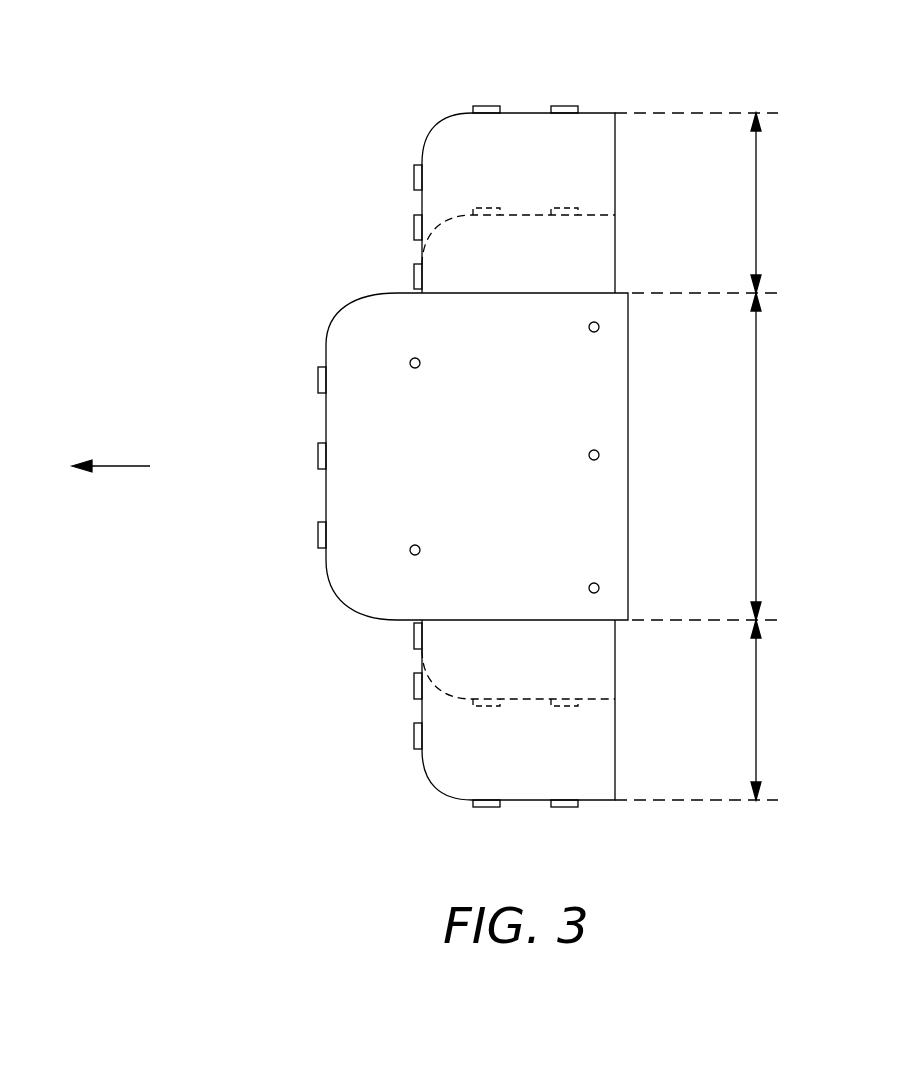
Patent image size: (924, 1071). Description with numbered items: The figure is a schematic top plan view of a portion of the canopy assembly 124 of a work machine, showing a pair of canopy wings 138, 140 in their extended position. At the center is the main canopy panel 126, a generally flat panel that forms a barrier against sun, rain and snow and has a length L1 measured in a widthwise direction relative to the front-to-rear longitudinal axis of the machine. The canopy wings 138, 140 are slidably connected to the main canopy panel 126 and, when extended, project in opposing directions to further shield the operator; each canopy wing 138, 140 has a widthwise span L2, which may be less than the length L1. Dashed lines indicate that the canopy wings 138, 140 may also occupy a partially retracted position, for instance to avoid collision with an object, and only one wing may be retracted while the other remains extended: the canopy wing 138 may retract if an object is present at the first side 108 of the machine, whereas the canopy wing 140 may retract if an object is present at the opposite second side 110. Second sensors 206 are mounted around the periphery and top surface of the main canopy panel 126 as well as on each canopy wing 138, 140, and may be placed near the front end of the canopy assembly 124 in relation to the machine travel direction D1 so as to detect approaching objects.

The second side 110 is at (538, 68).
The canopy assembly 124 is at (780, 69).
The canopy wing 140 is at (596, 163).
The main canopy panel 126 is at (338, 582).
The canopy wing 138 is at (596, 665).
The second sensor 206 is at (414, 280).
The first side 108 is at (517, 830).
The length L1 is at (772, 456).
The widthwise span L2 is at (703, 456).
The machine travel direction D1 is at (117, 466).